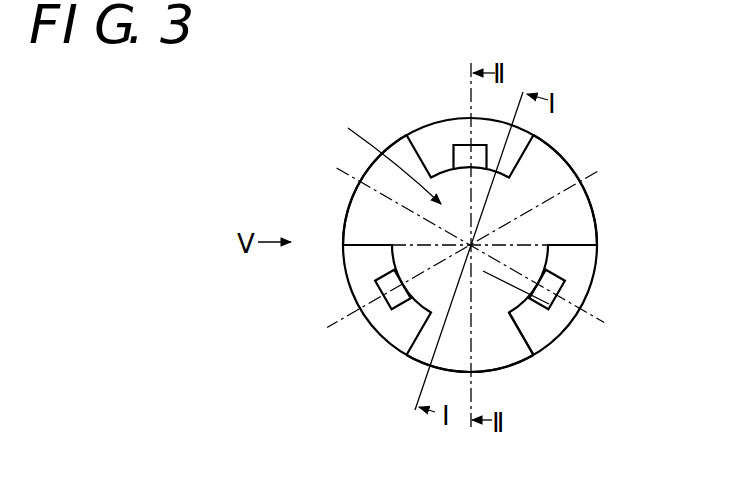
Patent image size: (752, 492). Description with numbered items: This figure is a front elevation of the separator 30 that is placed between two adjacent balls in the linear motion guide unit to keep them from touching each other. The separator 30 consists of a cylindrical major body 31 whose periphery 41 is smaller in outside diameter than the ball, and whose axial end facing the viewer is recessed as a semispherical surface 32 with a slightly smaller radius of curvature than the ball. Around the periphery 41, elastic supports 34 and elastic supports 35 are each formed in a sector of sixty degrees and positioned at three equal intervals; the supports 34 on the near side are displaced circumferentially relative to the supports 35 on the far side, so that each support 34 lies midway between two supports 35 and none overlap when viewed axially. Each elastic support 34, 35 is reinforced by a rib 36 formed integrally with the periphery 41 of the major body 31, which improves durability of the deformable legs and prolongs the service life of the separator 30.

The separator 30 is at (569, 147).
The major body 31 is at (382, 155).
The semispherical surface 32 is at (520, 303).
The elastic support 34 is at (350, 212).
The elastic support 35 is at (431, 144).
The rib 36 is at (462, 155).
The periphery 41 is at (433, 148).